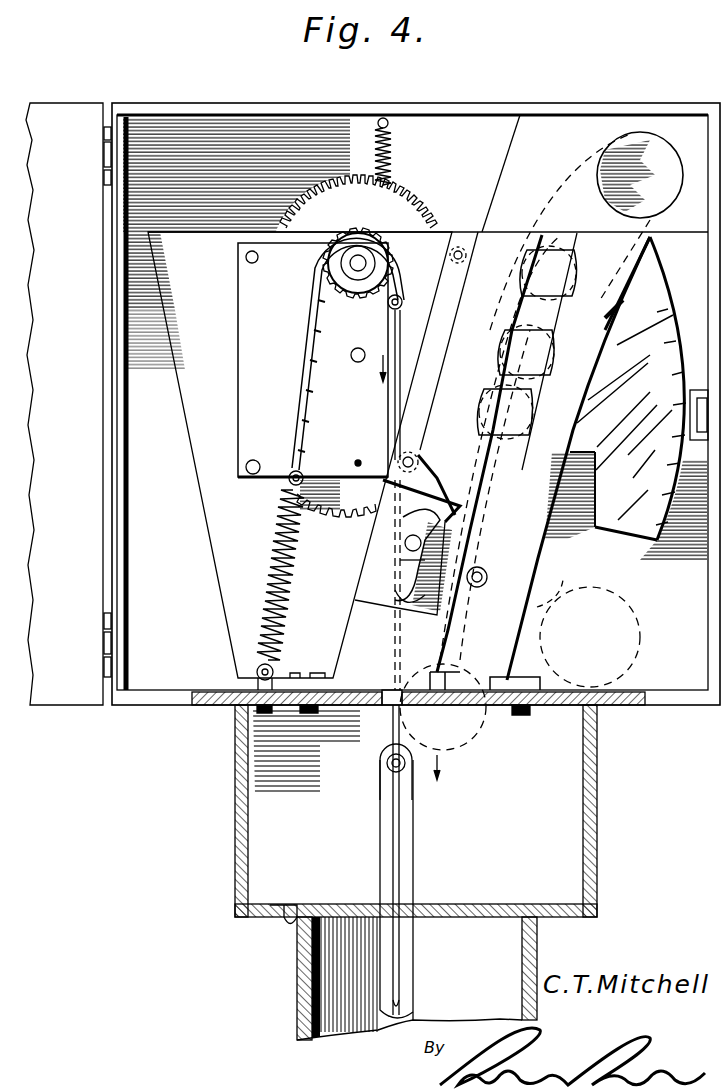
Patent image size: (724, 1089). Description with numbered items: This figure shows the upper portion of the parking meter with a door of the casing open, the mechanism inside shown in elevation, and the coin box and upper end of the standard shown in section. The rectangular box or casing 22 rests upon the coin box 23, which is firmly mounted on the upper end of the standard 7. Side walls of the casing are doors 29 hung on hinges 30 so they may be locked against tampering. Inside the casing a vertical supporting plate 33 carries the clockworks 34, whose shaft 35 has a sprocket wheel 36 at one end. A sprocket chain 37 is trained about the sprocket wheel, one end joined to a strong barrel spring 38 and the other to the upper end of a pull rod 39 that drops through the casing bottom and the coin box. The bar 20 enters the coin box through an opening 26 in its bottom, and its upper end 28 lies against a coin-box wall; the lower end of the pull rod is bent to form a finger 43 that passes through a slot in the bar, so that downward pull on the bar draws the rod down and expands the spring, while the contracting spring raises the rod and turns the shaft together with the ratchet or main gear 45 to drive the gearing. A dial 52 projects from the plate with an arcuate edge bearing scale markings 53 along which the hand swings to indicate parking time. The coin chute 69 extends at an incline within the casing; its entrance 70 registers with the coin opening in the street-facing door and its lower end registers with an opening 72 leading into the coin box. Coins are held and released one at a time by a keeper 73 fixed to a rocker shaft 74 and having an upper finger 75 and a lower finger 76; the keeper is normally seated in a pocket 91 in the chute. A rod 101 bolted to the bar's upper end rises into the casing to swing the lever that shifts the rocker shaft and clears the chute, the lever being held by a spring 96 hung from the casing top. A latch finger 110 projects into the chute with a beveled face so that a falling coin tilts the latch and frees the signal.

The door 29 is at (62, 120).
The hinge 30 is at (107, 160).
The box or casing 22 is at (268, 108).
The spring 96 is at (390, 163).
The main gear or ratchet gear 45 is at (410, 213).
The sprocket wheel 36 is at (349, 240).
The shaft 35 is at (350, 265).
The clockworks 34 is at (267, 300).
The pull rod 39 is at (393, 322).
The sprocket chain 37 is at (305, 372).
The supporting plate 33 is at (207, 445).
The barrel spring 38 is at (274, 517).
The upper finger 75 is at (460, 445).
The rocker shaft 74 is at (405, 542).
The keeper 73 is at (398, 560).
The recess or pocket 91 is at (372, 578).
The lower finger 76 is at (413, 617).
The opening 72 is at (383, 707).
The rod 101 is at (386, 767).
The coin box 23 is at (233, 838).
The upper end of the bar 28 is at (407, 838).
The side extension or finger 43 is at (400, 868).
The opening 26 is at (427, 898).
The standard 7 is at (310, 968).
The bar 20 is at (412, 977).
The entrance 70 is at (665, 162).
The scale markings 53 is at (647, 302).
The dial 52 is at (648, 330).
The coin chute 69 is at (552, 477).
The finger 110 is at (487, 577).